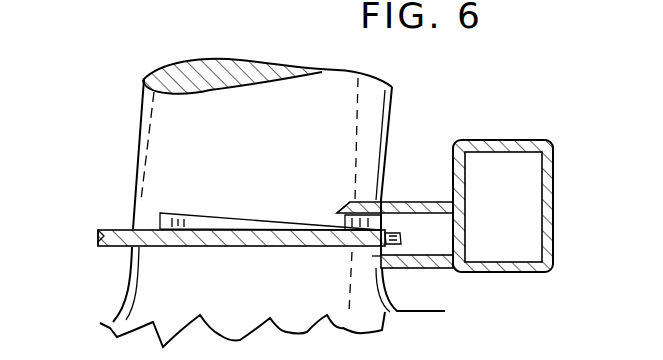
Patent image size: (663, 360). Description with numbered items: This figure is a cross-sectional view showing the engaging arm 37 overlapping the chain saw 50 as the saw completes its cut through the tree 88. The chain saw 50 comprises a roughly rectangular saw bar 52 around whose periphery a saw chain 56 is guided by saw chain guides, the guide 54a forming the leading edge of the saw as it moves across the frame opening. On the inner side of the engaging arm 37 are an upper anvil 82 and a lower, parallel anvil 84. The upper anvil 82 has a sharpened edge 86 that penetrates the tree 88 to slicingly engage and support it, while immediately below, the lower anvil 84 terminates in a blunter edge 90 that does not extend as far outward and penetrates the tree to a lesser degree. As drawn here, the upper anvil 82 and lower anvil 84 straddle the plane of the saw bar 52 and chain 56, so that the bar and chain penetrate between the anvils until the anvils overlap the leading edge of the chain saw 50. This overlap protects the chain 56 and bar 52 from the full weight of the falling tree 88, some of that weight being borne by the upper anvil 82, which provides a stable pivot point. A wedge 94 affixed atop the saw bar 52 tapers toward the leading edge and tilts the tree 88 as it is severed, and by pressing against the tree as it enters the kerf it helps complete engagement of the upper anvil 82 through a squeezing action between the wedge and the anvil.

The tree 88 is at (143, 138).
The engaging arm 37 is at (520, 140).
The upper anvil 82 is at (418, 202).
The lower anvil 84 is at (430, 255).
The sharpened edge 86 is at (348, 203).
The saw chain guide 54a is at (357, 222).
The saw chain 56 is at (398, 245).
The wedge 94 is at (160, 222).
The saw bar 52 is at (214, 246).
The blunter edge 90 is at (372, 262).
The chain saw 50 is at (97, 250).